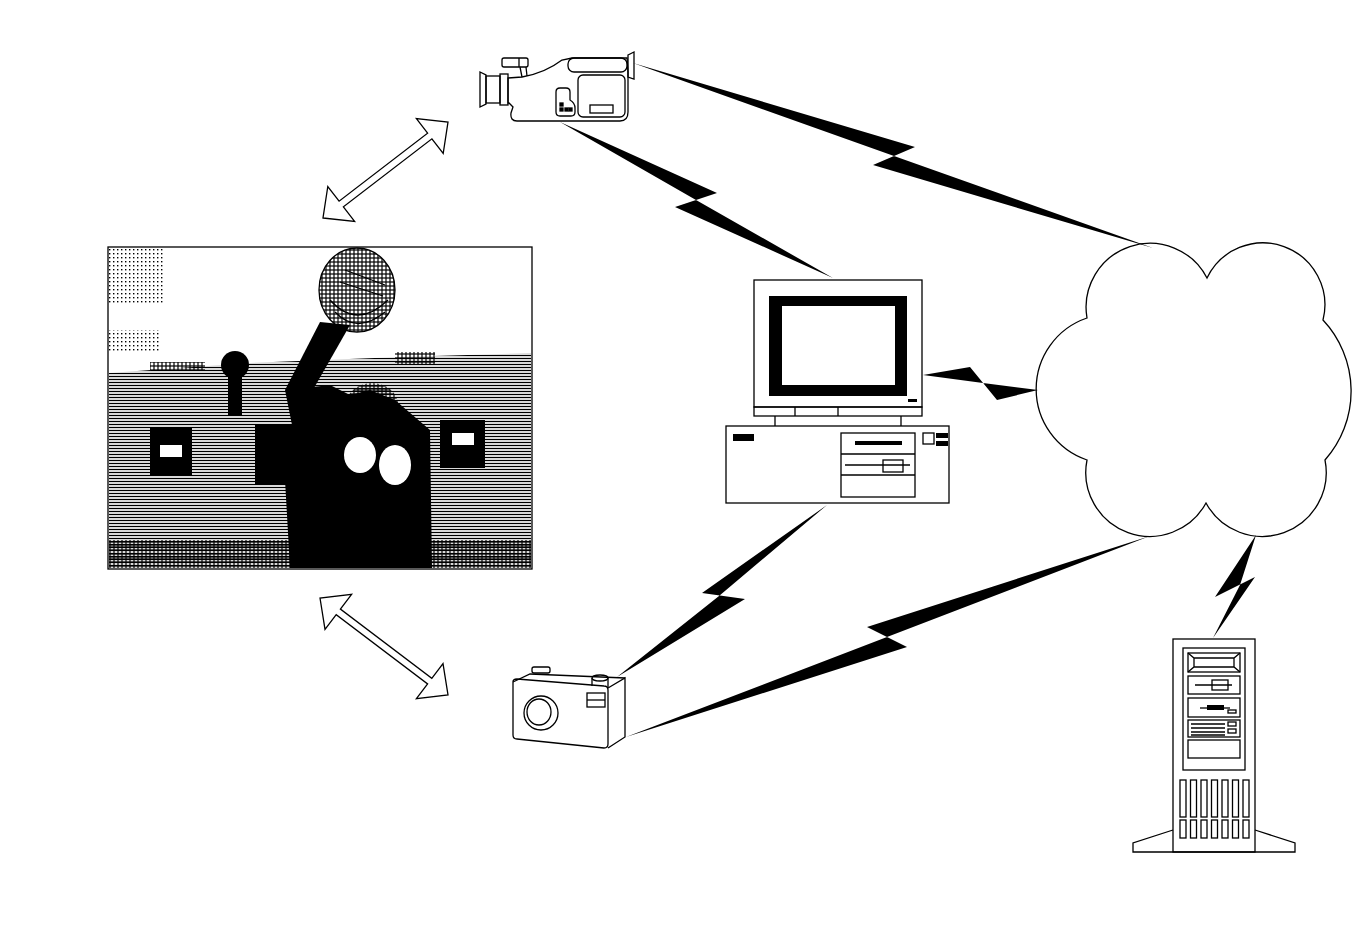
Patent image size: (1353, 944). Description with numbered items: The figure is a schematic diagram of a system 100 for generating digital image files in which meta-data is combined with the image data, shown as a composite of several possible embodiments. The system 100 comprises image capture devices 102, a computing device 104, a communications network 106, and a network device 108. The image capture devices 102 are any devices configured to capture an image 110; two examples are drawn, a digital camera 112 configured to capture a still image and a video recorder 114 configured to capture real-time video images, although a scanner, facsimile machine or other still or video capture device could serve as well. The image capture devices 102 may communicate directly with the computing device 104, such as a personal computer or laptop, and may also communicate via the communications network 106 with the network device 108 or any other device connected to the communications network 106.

The system 100 is at (1094, 116).
The image capture device 102 is at (448, 71).
The computing device 104 is at (725, 448).
The communications network 106 is at (1227, 403).
The network device 108 is at (1172, 748).
The image 110 is at (532, 347).
The digital camera 112 is at (533, 669).
The video recorder 114 is at (540, 124).